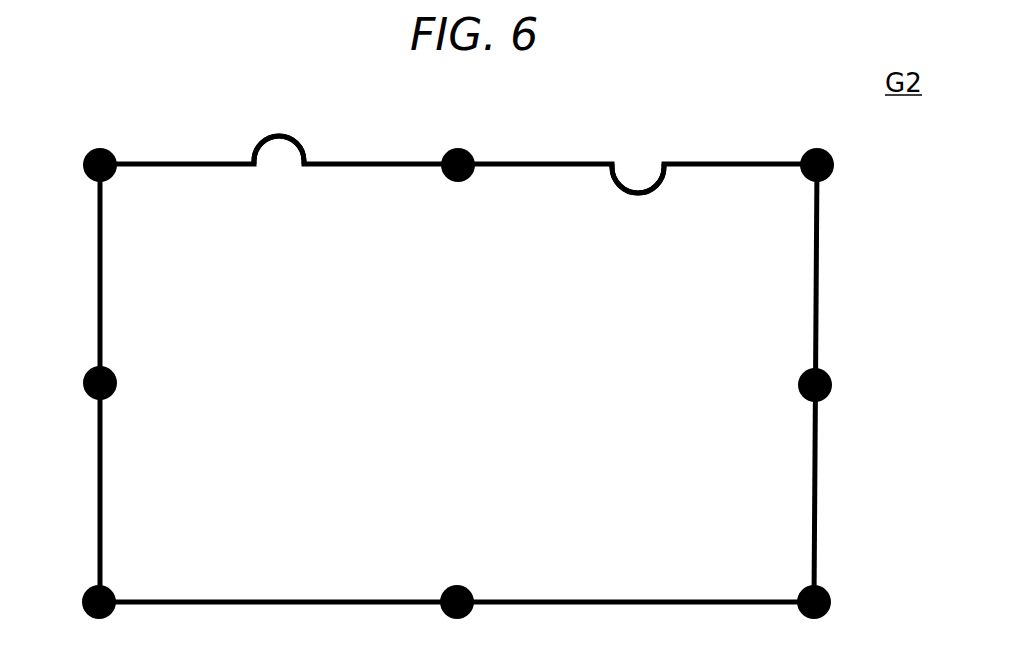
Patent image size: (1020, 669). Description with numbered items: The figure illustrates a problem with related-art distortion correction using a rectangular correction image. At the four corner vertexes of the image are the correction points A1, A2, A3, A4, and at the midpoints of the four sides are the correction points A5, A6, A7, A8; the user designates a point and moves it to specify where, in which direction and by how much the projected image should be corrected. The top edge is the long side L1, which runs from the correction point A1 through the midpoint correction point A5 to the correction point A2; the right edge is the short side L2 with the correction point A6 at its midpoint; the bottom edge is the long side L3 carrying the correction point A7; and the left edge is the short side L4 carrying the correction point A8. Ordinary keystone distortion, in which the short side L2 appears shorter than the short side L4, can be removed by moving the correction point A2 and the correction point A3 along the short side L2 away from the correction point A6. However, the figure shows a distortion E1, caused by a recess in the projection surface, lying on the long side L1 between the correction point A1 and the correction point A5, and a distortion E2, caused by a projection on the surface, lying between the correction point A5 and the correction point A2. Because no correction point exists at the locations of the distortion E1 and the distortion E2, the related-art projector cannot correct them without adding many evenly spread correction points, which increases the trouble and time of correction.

The correction point A1 is at (84, 158).
The correction point A2 is at (804, 153).
The correction point A3 is at (828, 606).
The correction point A4 is at (84, 594).
The correction point A5 is at (443, 157).
The correction point A6 is at (830, 390).
The correction point A7 is at (470, 612).
The correction point A8 is at (86, 377).
The long side L1 is at (535, 168).
The short side L2 is at (818, 445).
The long side L3 is at (323, 605).
The short side L4 is at (98, 440).
The distortion E1 is at (287, 183).
The distortion E2 is at (636, 168).